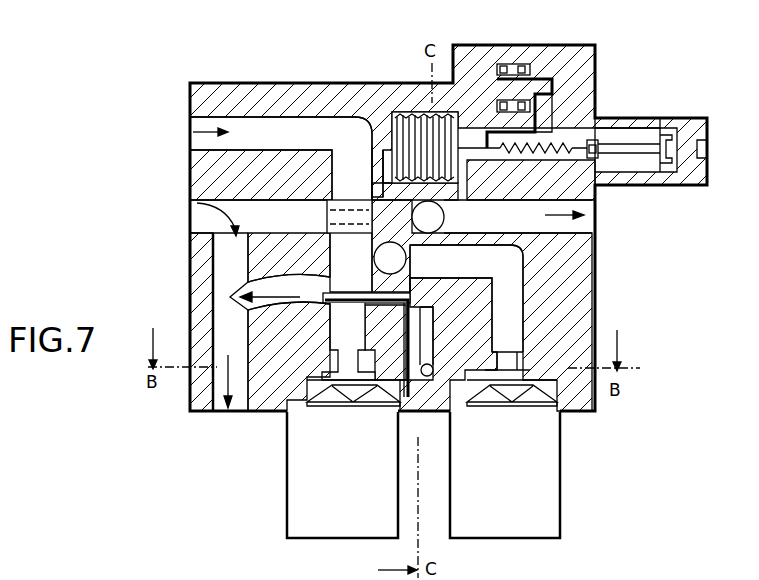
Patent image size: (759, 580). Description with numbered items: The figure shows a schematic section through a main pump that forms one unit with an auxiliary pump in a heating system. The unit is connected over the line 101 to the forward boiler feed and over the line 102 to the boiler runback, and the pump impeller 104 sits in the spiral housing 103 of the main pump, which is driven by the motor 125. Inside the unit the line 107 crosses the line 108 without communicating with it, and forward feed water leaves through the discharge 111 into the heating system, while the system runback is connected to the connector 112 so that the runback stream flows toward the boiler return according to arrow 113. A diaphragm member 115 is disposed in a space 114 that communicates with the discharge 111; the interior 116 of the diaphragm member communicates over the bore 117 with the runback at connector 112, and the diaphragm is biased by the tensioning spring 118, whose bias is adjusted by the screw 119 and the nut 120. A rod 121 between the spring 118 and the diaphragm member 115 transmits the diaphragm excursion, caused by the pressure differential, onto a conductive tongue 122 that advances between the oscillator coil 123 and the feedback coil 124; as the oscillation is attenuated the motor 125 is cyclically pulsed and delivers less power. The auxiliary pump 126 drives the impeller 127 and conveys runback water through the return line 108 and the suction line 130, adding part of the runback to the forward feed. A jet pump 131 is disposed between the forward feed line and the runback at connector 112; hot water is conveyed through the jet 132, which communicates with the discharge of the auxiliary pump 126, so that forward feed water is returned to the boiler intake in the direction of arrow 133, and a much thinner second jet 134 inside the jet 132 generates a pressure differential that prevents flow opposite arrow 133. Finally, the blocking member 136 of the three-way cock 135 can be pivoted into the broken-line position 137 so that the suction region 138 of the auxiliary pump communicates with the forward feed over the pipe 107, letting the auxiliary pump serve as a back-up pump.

The line 101 is at (193, 127).
The line 102 is at (222, 410).
The spiral housing 103 is at (305, 408).
The pump impeller 104 is at (322, 400).
The line 107 is at (290, 127).
The line 108 is at (281, 216).
The discharge 111 is at (580, 225).
The connector 112 is at (193, 198).
The arrow 113 is at (190, 233).
The space 114 is at (392, 112).
The diaphragm member 115 is at (400, 112).
The interior of the diaphragm member 116 is at (412, 120).
The bore 117 is at (367, 173).
The tensioning spring 118 is at (572, 143).
The screw 119 is at (638, 150).
The nut 120 is at (595, 160).
The rod 121 is at (477, 150).
The tongue 122 is at (550, 80).
The oscillator coil 123 is at (527, 66).
The feedback coil 124 is at (513, 110).
The motor 125 is at (290, 510).
The auxiliary pump 126 is at (533, 507).
The impeller 127 is at (522, 398).
The suction line 130 is at (485, 258).
The jet pump 131 is at (290, 305).
The jet 132 is at (365, 310).
The arrow 133 is at (265, 307).
The second jet 134 is at (410, 327).
The three-way cock 135 is at (393, 268).
The blocking member 136 is at (327, 277).
The position 137 is at (378, 240).
The suction region 138 is at (513, 328).